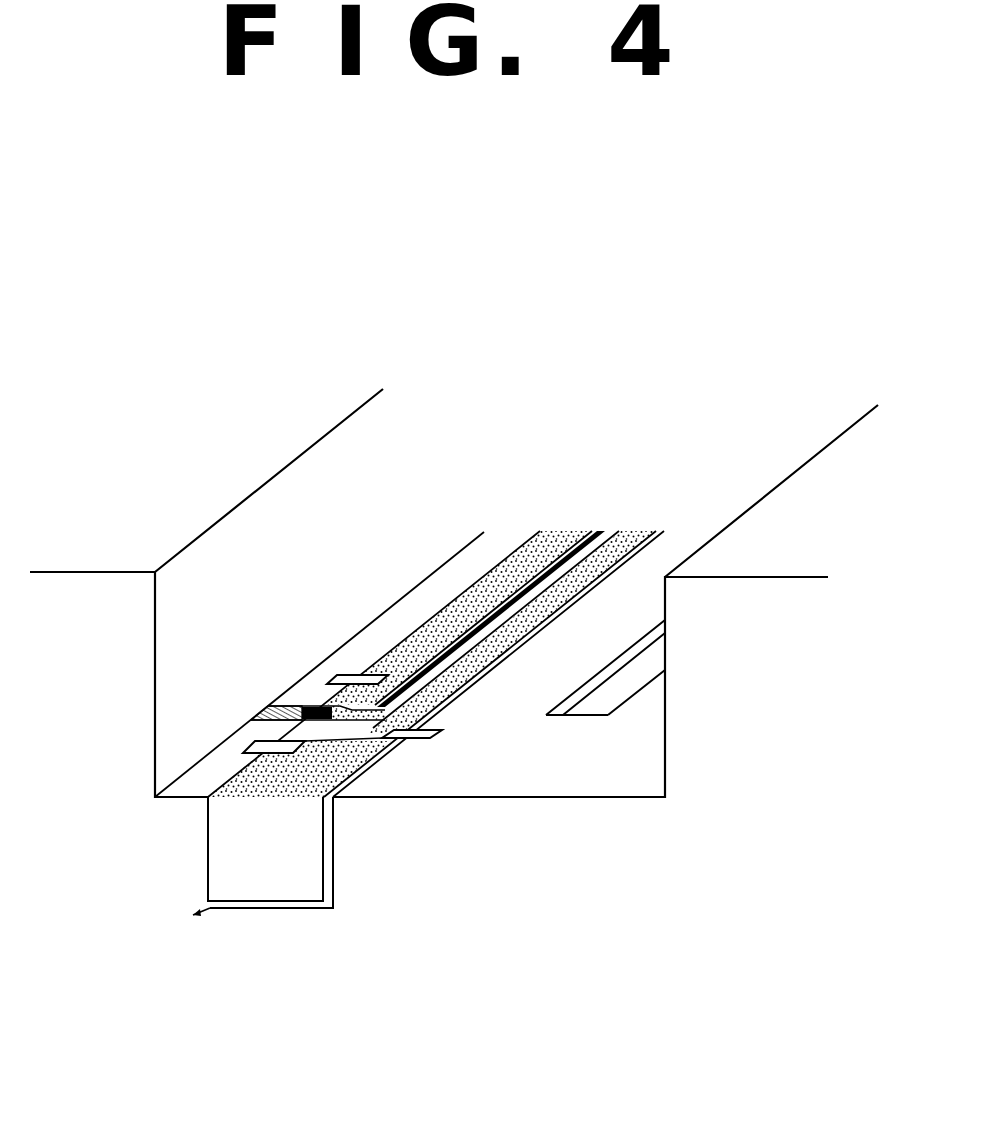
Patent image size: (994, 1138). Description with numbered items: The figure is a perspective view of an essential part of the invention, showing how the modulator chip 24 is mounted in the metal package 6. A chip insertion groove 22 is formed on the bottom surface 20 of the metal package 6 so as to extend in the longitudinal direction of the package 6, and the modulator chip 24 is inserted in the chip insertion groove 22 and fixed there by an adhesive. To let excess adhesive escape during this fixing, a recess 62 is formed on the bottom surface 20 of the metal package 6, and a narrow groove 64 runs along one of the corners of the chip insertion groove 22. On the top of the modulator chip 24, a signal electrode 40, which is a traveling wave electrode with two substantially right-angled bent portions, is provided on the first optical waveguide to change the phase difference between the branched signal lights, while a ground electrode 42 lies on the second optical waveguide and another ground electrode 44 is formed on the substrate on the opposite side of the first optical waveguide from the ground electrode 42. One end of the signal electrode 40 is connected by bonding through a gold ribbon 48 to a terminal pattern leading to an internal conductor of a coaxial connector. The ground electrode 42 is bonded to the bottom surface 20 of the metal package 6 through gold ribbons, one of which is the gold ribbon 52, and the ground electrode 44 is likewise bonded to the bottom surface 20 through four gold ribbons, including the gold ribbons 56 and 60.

The metal package 6 is at (757, 553).
The bottom surface 20 is at (560, 780).
The chip insertion groove 22 is at (332, 840).
The modulator chip 24 is at (282, 873).
The signal electrode 40 is at (598, 537).
The ground electrode 42 is at (522, 557).
The ground electrode 44 is at (635, 537).
The gold ribbon 48 is at (312, 707).
The gold ribbon 52 is at (345, 677).
The gold ribbon 56 is at (253, 743).
The gold ribbon 60 is at (442, 735).
The recess 62 is at (632, 676).
The narrow groove 64 is at (193, 915).